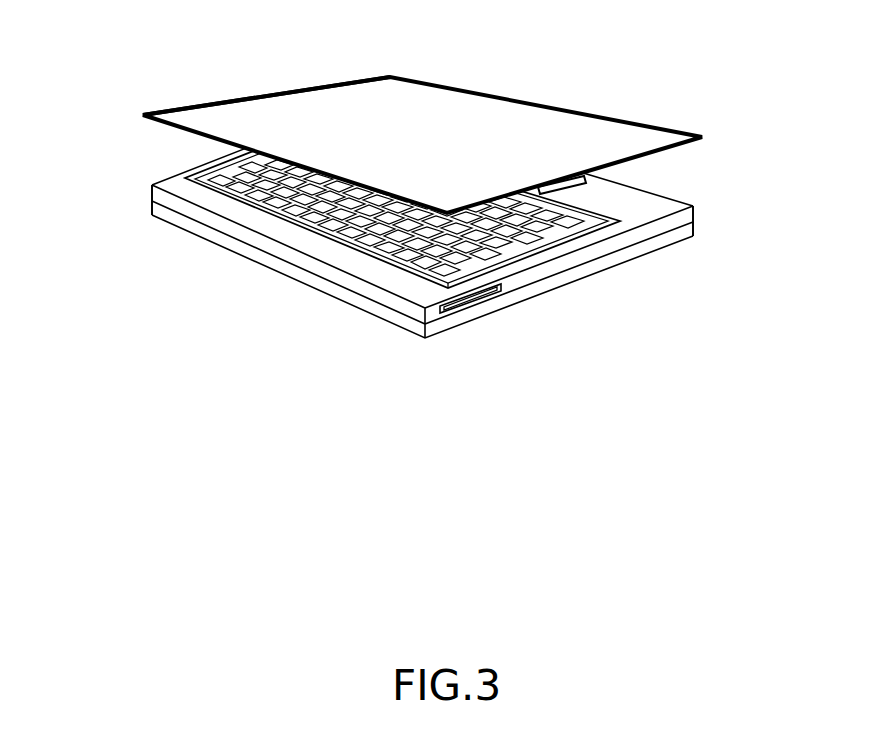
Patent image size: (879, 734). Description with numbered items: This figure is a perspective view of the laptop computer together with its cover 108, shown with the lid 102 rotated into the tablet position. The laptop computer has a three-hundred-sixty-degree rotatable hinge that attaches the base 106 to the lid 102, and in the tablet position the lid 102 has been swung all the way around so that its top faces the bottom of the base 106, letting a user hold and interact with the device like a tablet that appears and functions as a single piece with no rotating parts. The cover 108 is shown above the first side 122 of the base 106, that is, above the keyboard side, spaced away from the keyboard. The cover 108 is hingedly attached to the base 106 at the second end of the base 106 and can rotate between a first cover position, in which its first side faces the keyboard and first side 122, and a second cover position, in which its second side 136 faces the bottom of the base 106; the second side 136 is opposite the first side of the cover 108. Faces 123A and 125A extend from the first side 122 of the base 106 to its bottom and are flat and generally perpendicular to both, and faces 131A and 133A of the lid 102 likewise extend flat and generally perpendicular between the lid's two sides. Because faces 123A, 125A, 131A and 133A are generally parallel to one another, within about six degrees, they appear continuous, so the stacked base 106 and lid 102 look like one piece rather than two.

The lid 102 is at (500, 312).
The base 106 is at (152, 190).
The cover 108 is at (433, 133).
The first side 122 is at (652, 208).
The face 123A is at (694, 230).
The face 125A is at (150, 189).
The face 131A is at (578, 270).
The face 133A is at (263, 262).
The second side 136 is at (492, 116).